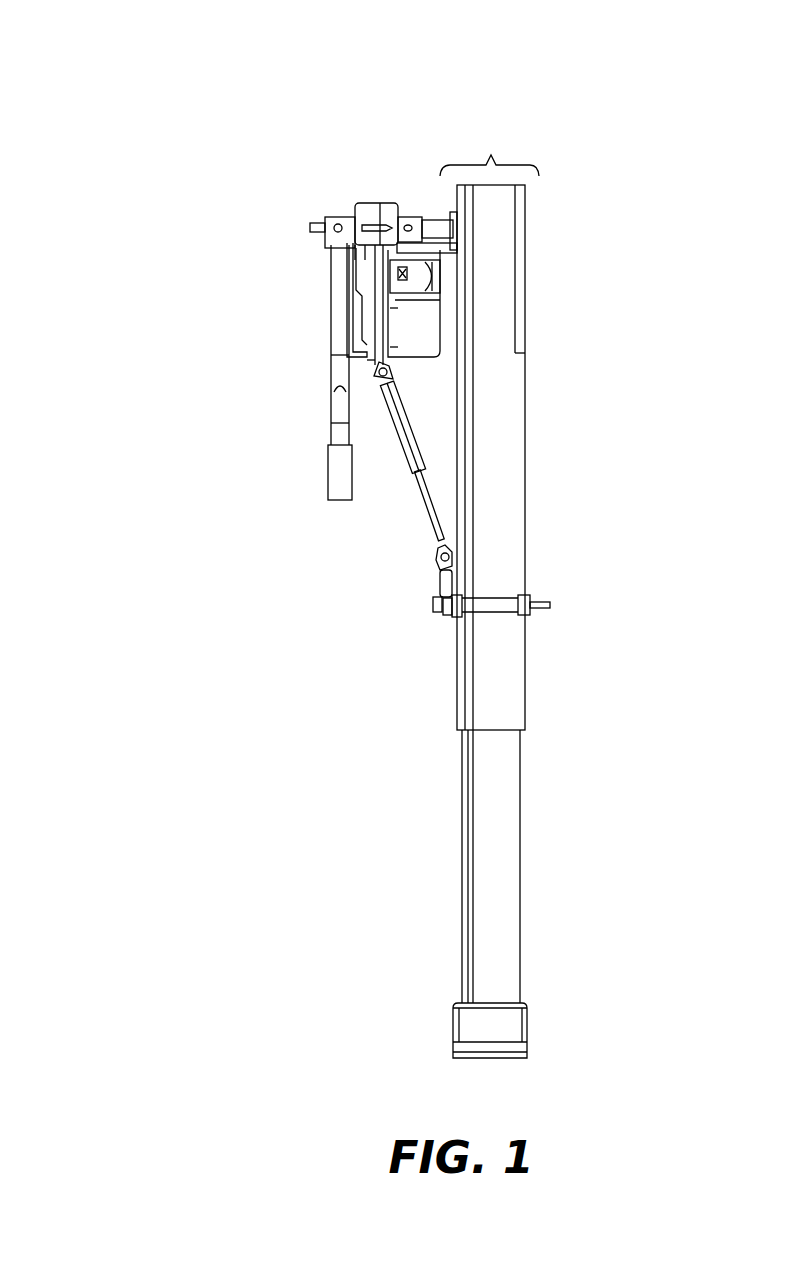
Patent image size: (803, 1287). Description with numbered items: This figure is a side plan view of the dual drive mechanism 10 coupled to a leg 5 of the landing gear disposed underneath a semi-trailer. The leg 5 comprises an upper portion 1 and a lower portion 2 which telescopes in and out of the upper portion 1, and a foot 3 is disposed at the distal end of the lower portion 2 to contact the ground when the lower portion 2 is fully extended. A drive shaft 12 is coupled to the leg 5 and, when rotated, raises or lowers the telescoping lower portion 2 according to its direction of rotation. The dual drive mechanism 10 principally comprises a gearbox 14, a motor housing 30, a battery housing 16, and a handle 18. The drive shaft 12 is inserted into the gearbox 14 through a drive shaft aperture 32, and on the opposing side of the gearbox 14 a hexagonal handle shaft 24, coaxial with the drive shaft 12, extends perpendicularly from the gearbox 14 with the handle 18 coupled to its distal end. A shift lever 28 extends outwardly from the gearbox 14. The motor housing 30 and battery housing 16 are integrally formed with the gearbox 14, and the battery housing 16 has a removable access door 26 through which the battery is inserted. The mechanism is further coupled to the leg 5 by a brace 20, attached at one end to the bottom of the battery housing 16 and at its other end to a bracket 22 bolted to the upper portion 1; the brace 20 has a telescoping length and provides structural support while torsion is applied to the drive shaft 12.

The dual drive mechanism 10 is at (258, 165).
The upper portion 1 is at (502, 462).
The lower portion 2 is at (507, 848).
The foot 3 is at (508, 1032).
The leg 5 is at (494, 152).
The drive shaft 12 is at (434, 220).
The gearbox 14 is at (365, 205).
The battery housing 16 is at (420, 325).
The handle 18 is at (338, 402).
The brace 20 is at (408, 438).
The bracket 22 is at (483, 608).
The handle shaft 24 is at (325, 227).
The removable access door 26 is at (360, 325).
The shift lever 28 is at (392, 228).
The motor housing 30 is at (425, 262).
The drive shaft aperture 32 is at (408, 215).